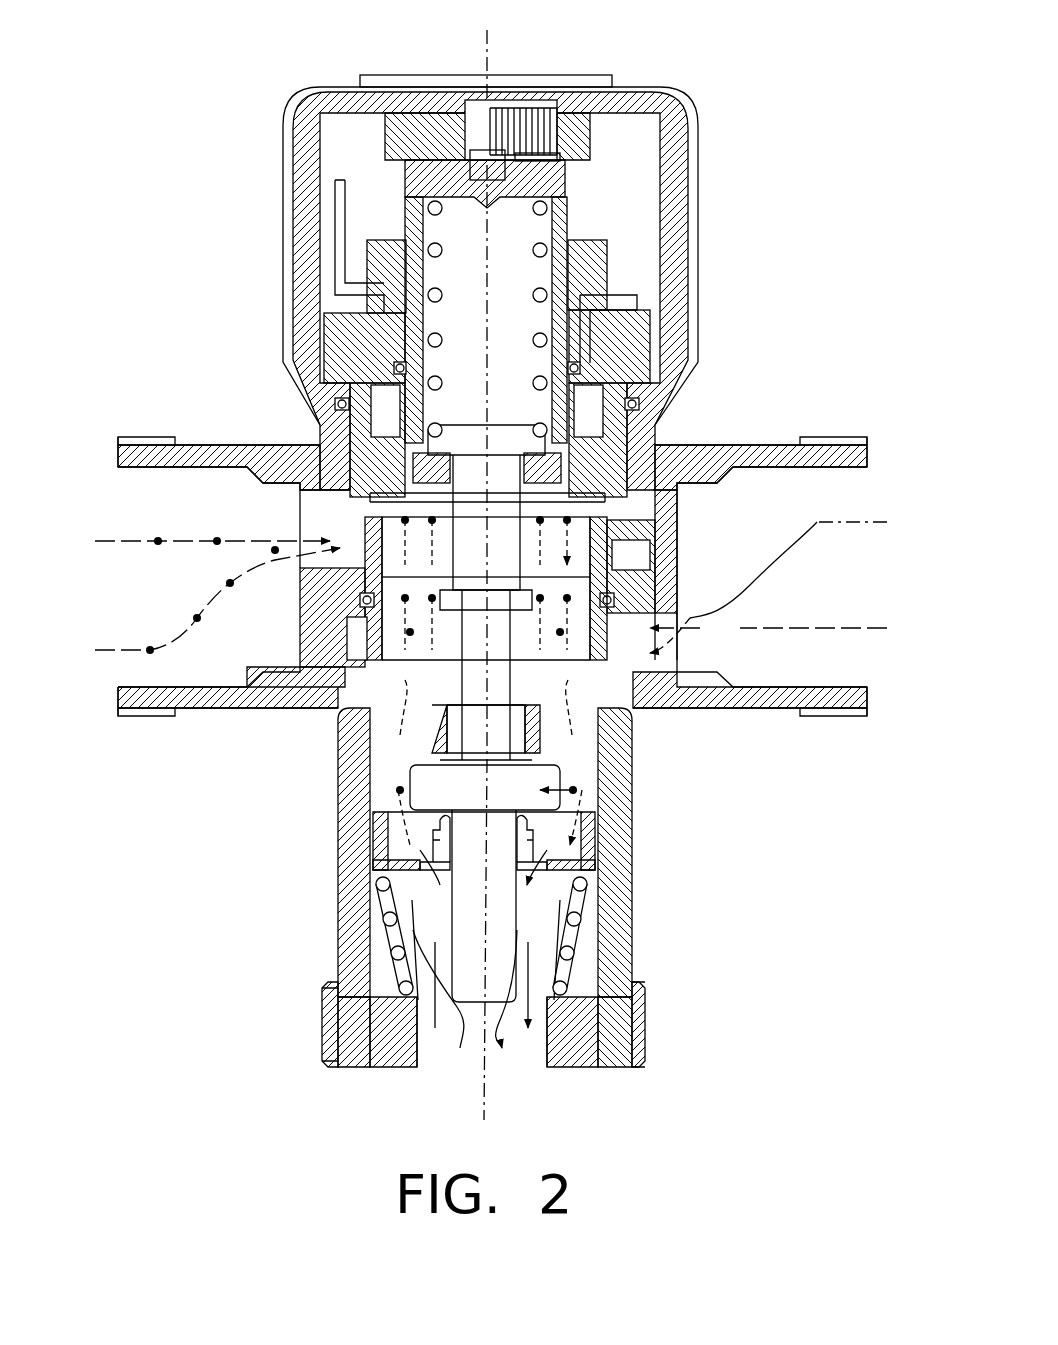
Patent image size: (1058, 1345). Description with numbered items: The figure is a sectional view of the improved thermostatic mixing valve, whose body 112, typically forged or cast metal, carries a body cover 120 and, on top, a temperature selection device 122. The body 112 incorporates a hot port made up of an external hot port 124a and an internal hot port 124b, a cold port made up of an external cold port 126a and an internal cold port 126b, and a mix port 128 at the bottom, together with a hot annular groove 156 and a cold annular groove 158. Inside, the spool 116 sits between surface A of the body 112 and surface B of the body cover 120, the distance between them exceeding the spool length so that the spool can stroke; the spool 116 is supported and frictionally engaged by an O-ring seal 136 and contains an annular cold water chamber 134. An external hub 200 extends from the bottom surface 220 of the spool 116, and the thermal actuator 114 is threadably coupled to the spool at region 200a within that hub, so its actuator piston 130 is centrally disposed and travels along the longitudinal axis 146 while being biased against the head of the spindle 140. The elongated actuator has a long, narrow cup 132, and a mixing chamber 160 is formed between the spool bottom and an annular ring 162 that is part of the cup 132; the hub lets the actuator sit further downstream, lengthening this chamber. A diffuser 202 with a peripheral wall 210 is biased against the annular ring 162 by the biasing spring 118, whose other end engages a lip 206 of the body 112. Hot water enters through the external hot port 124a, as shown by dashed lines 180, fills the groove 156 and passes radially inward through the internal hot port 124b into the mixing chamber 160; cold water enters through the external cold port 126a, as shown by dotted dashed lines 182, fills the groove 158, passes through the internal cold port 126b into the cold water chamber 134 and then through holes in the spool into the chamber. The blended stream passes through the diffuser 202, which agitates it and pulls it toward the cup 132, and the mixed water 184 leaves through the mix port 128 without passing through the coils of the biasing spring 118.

The body 112 is at (625, 905).
The thermal actuator 114 is at (565, 848).
The spool 116 is at (640, 547).
The biasing spring 118 is at (380, 920).
The body cover 120 is at (650, 335).
The temperature selection device 122 is at (318, 68).
The external hot port 124a is at (860, 652).
The internal hot port 124b is at (680, 712).
The external cold port 126a is at (173, 596).
The internal cold port 126b is at (360, 520).
The mix port 128 is at (520, 1060).
The actuator piston 130 is at (690, 617).
The cup 132 is at (497, 985).
The annular cold water chamber 134 is at (330, 535).
The O-ring seal 136 is at (300, 620).
The spindle 140 is at (600, 340).
The longitudinal axis 146 is at (490, 72).
The hot annular groove 156 is at (340, 655).
The cold annular groove 158 is at (660, 556).
The mixing chamber 160 is at (560, 790).
The annular ring 162 is at (415, 790).
The dashed lines 180 is at (810, 528).
The dotted dashed lines 182 is at (147, 544).
The mixed water 184 is at (497, 1000).
The external hub 200 is at (440, 735).
The region 200a is at (545, 815).
The diffuser 202 is at (578, 875).
The lip 206 is at (385, 988).
The peripheral wall 210 is at (560, 862).
The bottom surface 220 is at (590, 752).
The surface A is at (345, 708).
The surface B is at (685, 470).